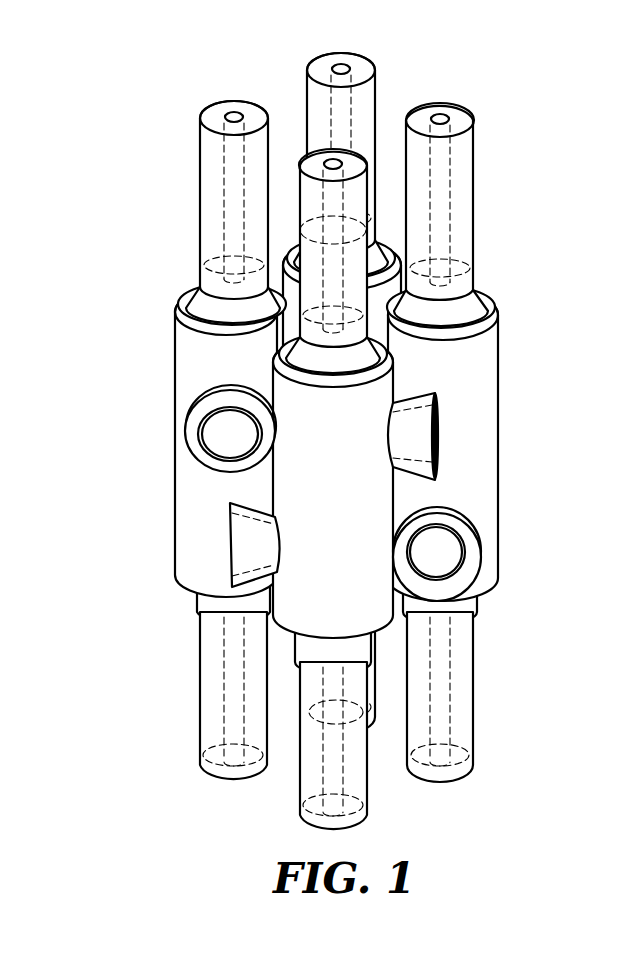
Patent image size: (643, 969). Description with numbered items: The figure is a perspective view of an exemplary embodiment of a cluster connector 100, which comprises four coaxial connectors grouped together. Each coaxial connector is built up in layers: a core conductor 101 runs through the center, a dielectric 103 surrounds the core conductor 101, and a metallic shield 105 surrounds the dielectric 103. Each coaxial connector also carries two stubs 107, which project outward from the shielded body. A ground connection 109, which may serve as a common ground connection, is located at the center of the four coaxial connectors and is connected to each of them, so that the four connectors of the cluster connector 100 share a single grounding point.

The cluster connector 100 is at (360, 440).
The core conductor 101 is at (488, 200).
The dielectric 103 is at (486, 201).
The metallic shield 105 is at (489, 445).
The stub 107 is at (340, 493).
The ground connection 109 is at (427, 258).